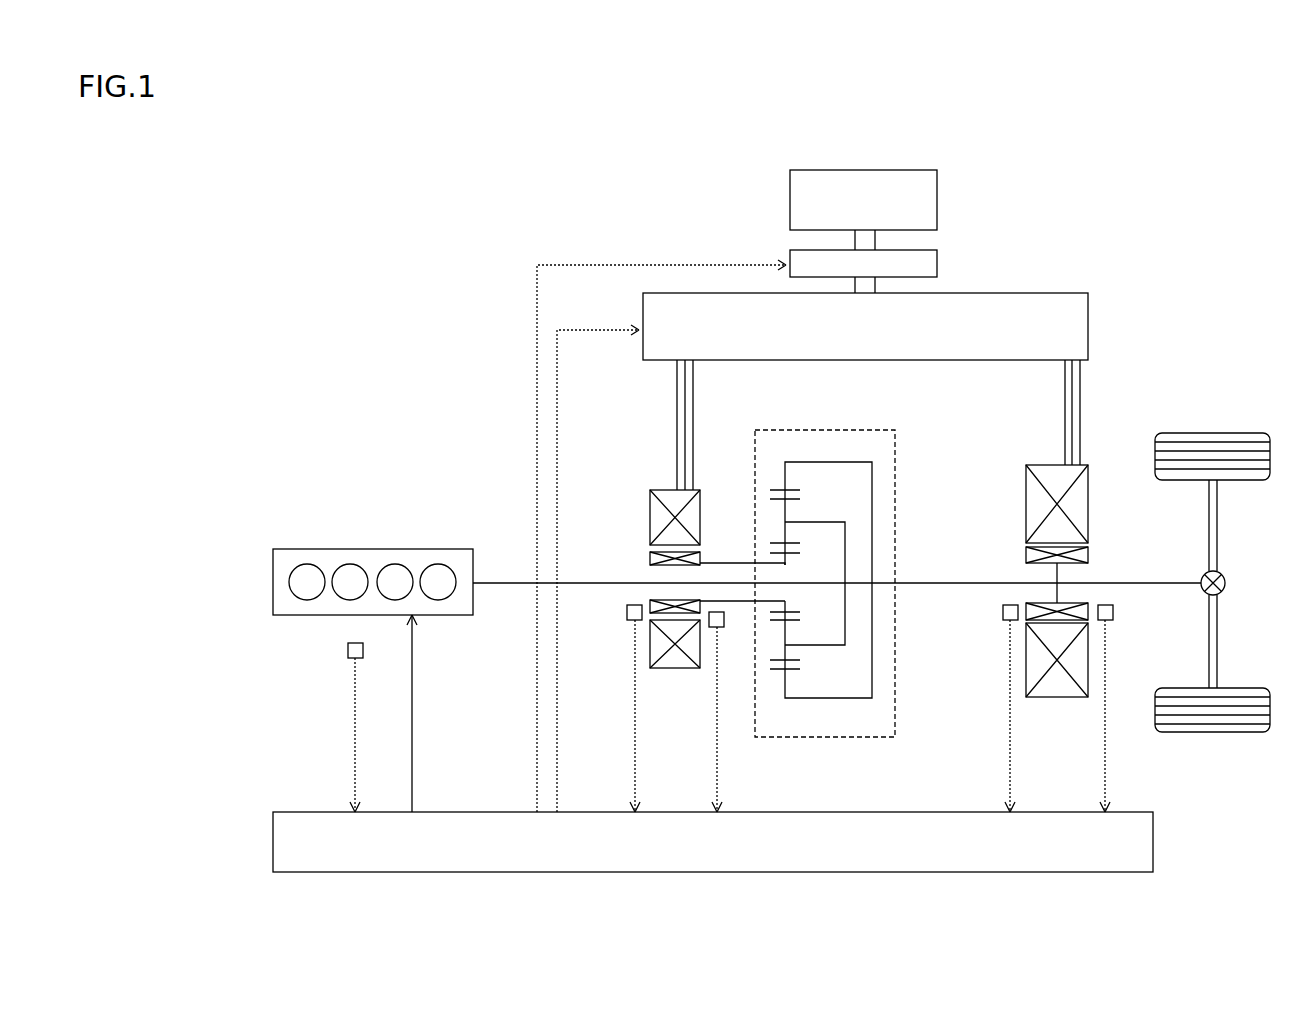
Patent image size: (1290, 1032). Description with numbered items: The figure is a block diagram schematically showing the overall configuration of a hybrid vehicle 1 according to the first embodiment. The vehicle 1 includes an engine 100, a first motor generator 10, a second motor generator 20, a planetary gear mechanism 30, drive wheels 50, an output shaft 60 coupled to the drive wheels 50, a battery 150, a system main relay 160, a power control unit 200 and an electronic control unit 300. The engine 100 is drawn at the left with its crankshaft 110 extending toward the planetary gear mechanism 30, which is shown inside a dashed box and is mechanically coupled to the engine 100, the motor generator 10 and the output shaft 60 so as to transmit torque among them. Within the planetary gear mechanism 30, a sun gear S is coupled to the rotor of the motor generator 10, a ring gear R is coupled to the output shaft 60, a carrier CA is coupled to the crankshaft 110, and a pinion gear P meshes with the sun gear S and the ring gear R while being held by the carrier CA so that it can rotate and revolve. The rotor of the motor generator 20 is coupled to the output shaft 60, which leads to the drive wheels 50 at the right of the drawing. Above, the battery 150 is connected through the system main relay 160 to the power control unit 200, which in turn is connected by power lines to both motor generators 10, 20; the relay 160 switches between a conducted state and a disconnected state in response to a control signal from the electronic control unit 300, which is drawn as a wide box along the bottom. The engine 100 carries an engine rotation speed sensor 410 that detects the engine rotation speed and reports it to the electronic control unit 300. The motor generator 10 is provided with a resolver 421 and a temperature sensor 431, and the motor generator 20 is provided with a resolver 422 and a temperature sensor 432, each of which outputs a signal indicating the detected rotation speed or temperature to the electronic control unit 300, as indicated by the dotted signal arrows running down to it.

The vehicle 1 is at (1072, 190).
The motor generator 10 is at (657, 490).
The motor generator 20 is at (1040, 465).
The planetary gear mechanism 30 is at (812, 569).
The drive wheels 50 is at (1238, 433).
The output shaft 60 is at (1143, 583).
The engine 100 is at (420, 549).
The crankshaft 110 is at (501, 583).
The battery 150 is at (938, 200).
The system main relay 160 is at (938, 263).
The power control unit 200 is at (1033, 293).
The electronic control unit 300 is at (895, 812).
The engine rotation speed sensor 410 is at (348, 652).
The resolver 421 is at (627, 613).
The resolver 422 is at (1003, 613).
The temperature sensor 431 is at (720, 627).
The temperature sensor 432 is at (1113, 613).
The ring gear R is at (778, 490).
The pinion gear P is at (778, 502).
The sun gear S is at (789, 555).
The carrier CA is at (840, 522).